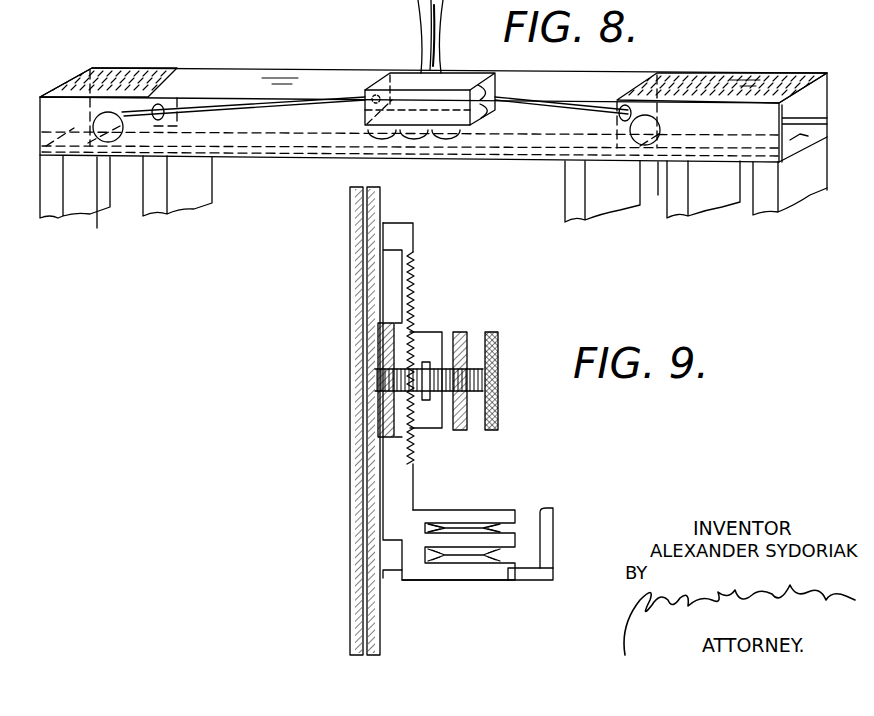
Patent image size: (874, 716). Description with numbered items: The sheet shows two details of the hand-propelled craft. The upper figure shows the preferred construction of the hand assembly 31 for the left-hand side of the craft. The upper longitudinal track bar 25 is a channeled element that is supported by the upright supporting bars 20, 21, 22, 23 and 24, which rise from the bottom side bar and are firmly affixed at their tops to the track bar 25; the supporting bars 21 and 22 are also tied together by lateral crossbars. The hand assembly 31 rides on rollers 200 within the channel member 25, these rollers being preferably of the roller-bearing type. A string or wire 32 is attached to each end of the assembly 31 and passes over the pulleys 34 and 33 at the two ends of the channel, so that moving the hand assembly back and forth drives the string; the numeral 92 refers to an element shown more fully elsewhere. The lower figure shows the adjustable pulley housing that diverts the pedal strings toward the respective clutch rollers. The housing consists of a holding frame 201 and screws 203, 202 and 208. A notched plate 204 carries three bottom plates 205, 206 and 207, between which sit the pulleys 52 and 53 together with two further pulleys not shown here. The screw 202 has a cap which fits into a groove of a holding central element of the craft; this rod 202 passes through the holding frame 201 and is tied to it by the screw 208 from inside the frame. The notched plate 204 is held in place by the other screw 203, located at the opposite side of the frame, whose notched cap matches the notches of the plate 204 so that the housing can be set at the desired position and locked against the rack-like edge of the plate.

In FIG. 8, the vertical supporting bar 20 is at (74, 207).
In FIG. 8, the vertical supporting bar 21 is at (192, 202).
In FIG. 8, the vertical supporting bar 22 is at (604, 203).
In FIG. 8, the vertical supporting bar 23 is at (715, 202).
In FIG. 8, the vertical supporting bar 24 is at (790, 200).
In FIG. 8, the longitudinal track bar 25 is at (762, 73).
In FIG. 8, the hand assembly 31 is at (416, 33).
In FIG. 8, the cable 32 is at (560, 100).
In FIG. 8, the pulley 33 is at (660, 128).
In FIG. 8, the pulley 34 is at (118, 118).
In FIG. 8, the member 92 is at (265, 0).
In FIG. 8, the rollers 200 is at (400, 137).
In FIG. 9, the holding frame 201 is at (393, 326).
In FIG. 9, the screw 202 is at (375, 378).
In FIG. 9, the screw 203 is at (498, 333).
In FIG. 9, the notched plate 204 is at (413, 240).
In FIG. 9, the bottom plate 205 is at (462, 513).
In FIG. 9, the bottom plate 206 is at (517, 543).
In FIG. 9, the bottom plate 207 is at (470, 578).
In FIG. 9, the screw 208 is at (396, 418).
In FIG. 9, the pulley 52 is at (457, 563).
In FIG. 9, the pulley 53 is at (488, 522).